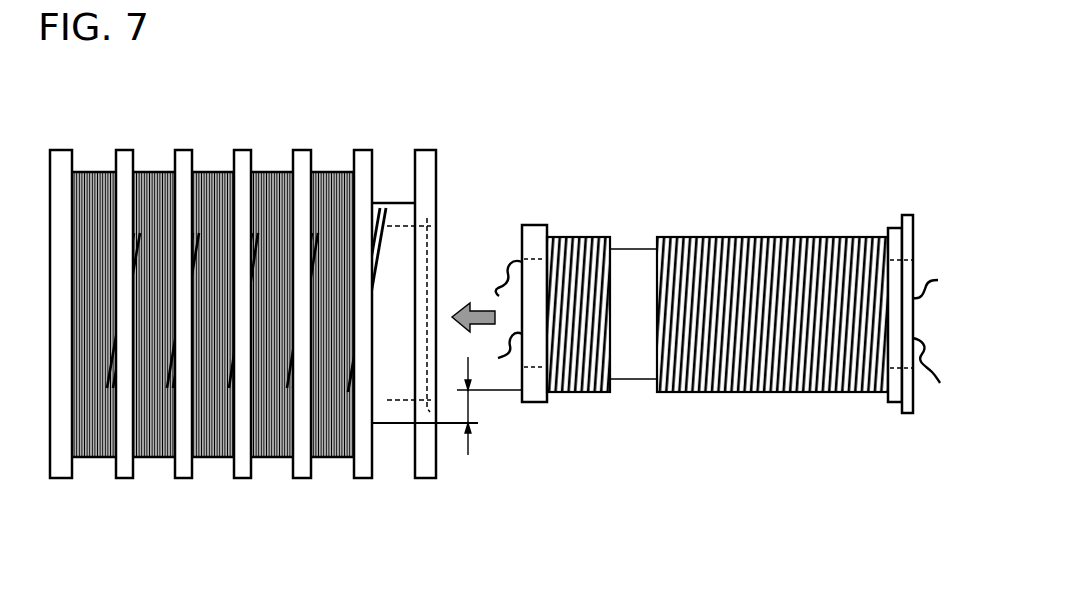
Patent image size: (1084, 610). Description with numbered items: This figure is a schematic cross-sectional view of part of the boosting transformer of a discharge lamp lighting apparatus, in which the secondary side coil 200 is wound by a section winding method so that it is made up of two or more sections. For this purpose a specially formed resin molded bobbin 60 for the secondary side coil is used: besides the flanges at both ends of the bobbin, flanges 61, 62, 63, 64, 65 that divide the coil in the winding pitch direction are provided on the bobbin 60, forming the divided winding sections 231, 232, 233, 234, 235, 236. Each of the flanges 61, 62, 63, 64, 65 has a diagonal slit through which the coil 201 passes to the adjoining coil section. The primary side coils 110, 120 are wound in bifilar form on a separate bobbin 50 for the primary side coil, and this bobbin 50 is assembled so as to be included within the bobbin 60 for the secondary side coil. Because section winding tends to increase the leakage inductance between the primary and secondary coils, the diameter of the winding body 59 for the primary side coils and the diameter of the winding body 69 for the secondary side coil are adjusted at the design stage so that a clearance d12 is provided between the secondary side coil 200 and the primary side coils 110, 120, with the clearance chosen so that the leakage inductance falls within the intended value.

The secondary side coil 200 is at (97, 460).
The flange 61 is at (124, 478).
The flange 62 is at (183, 478).
The flange 63 is at (242, 478).
The flange 64 is at (302, 478).
The flange 65 is at (363, 478).
The bobbin for the secondary side coil 60 is at (436, 462).
The winding body for the secondary side coil 69 is at (395, 425).
The coil 201 is at (385, 220).
The divided winding section 231 is at (113, 150).
The divided winding section 232 is at (173, 150).
The divided winding section 233 is at (232, 150).
The divided winding section 234 is at (291, 150).
The divided winding section 235 is at (351, 150).
The divided winding section 236 is at (412, 150).
The bobbin for the primary side coil 50 is at (533, 402).
The winding body for the primary side coils 59 is at (635, 390).
The primary side coil 110 is at (727, 392).
The primary side coil 120 is at (914, 314).
The clearance d12 is at (489, 409).